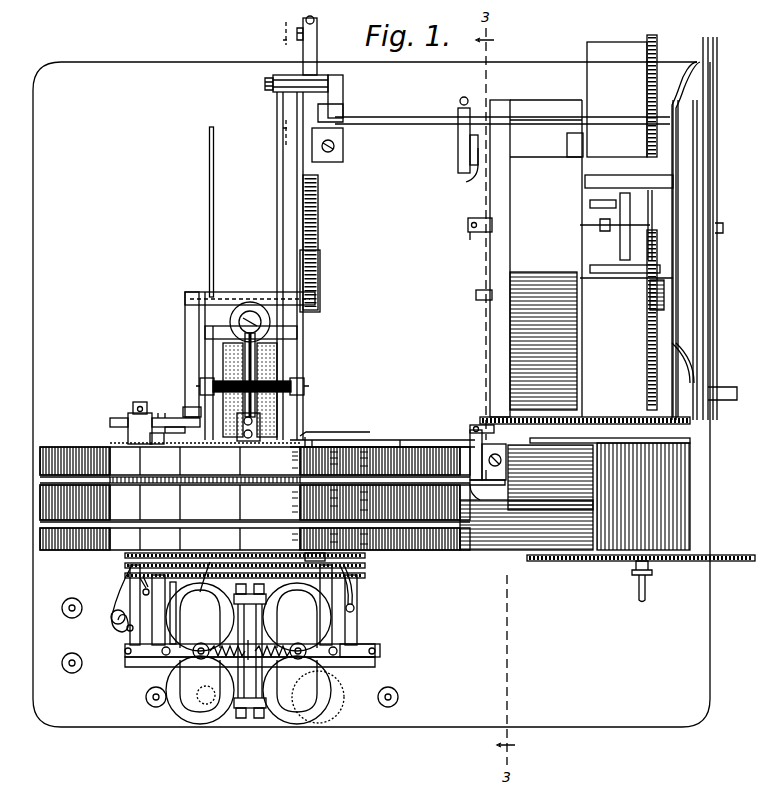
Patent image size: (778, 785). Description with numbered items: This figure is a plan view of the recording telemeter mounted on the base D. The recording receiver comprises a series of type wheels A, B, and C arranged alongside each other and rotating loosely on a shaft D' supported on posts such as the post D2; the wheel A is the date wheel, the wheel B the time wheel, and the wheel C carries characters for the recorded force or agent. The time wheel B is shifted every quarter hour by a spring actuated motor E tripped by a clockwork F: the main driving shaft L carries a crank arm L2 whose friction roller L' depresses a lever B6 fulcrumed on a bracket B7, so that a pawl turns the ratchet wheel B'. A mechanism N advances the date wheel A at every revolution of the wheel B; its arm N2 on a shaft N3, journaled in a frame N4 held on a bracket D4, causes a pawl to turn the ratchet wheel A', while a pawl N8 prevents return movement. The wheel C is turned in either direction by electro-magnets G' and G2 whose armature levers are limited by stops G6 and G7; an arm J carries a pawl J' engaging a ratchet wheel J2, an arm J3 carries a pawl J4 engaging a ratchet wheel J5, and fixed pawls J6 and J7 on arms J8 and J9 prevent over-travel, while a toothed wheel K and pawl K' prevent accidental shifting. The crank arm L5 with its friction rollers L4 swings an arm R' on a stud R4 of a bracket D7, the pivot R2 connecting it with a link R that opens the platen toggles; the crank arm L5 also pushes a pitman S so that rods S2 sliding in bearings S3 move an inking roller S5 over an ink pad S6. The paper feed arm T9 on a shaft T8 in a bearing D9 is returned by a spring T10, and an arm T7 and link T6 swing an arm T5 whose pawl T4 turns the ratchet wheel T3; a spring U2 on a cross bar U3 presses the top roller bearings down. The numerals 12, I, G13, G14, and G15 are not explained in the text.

The rods S2 is at (211, 236).
The link R is at (270, 266).
The arm R' is at (284, 67).
The pivot R2 is at (266, 84).
The stud R4 is at (308, 82).
The crank arm L5 is at (318, 47).
The friction rollers L4 is at (314, 20).
The dimension line 12 is at (280, 82).
The bracket D7 is at (336, 148).
The spring T10 is at (318, 212).
The arm T9 is at (320, 258).
The bearing D9 is at (237, 297).
The shaft T8 is at (186, 298).
The post D2 is at (252, 303).
The bearings S3 is at (218, 336).
The stippled guide I is at (219, 390).
The shaft D' is at (290, 375).
The inking roller S5 is at (298, 386).
The ink-supplying pad S6 is at (262, 416).
The pitman S is at (322, 429).
The cross bar U3 is at (128, 431).
The spring U2 is at (138, 404).
The ratchet wheel T3 is at (112, 420).
The arm T7 is at (185, 418).
The arm T5 is at (160, 414).
The link T6 is at (180, 426).
The pawl T4 is at (164, 436).
The date wheel A is at (255, 453).
The ratchet wheel A' is at (205, 458).
The time wheel B is at (239, 505).
The ratchet wheel B' is at (255, 508).
The type wheel C is at (46, 538).
The frame N4 is at (385, 438).
The pawl N8 is at (350, 440).
The mechanism N is at (420, 430).
The shaft N3 is at (475, 440).
The bracket D4 is at (493, 445).
The arm N2 is at (466, 486).
The main driving shaft L is at (502, 108).
The crank arm L2 is at (458, 148).
The friction roller L' is at (464, 194).
The spring actuated gearing or motor E is at (562, 282).
The bracket B7 is at (478, 297).
The lever B6 is at (482, 378).
The clockwork F is at (706, 206).
The base D is at (641, 615).
The toothed wheel K is at (245, 545).
The pawl K' is at (245, 550).
The ratchet wheel J2 is at (225, 562).
The pawl J7 is at (315, 553).
The arm J is at (114, 605).
The pawl J' is at (115, 595).
The arm J8 is at (155, 610).
The pawl J6 is at (176, 612).
The ratchet wheel J5 is at (386, 568).
The pawl J4 is at (333, 598).
The arm J9 is at (356, 610).
The arm J3 is at (358, 626).
The electro-magnet G' is at (200, 669).
The electro-magnet G2 is at (302, 704).
The stop G6 is at (125, 651).
The stop G7 is at (380, 651).
The pivot G13 is at (201, 645).
The pivot G14 is at (300, 643).
The standard G15 is at (250, 651).